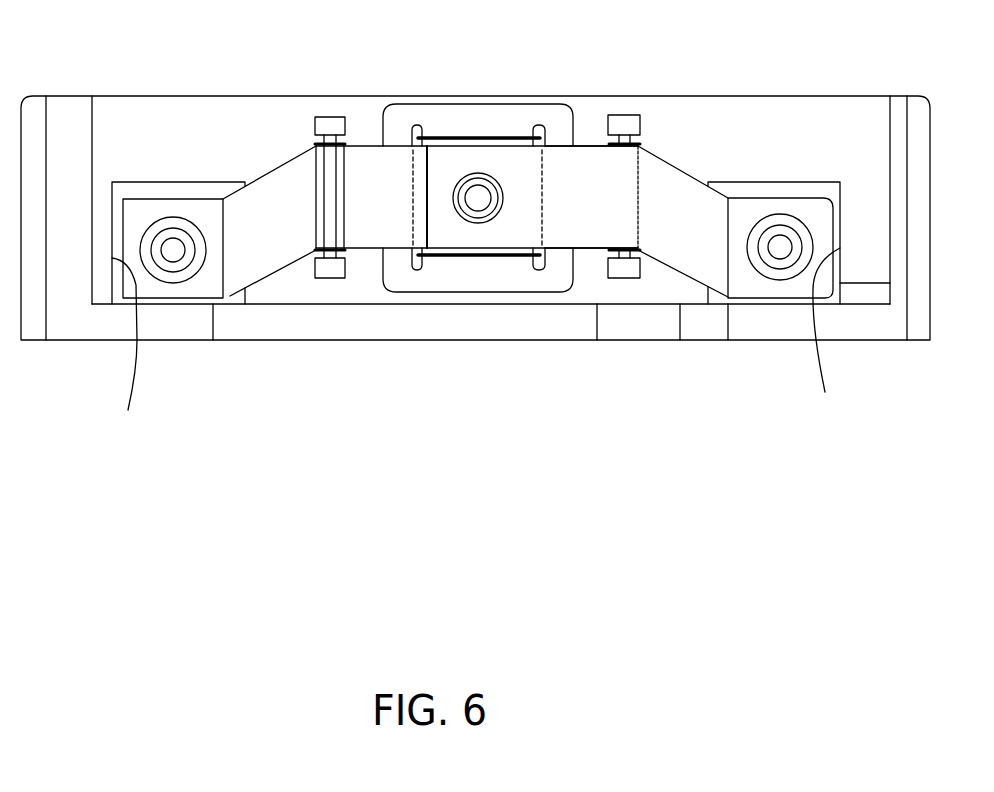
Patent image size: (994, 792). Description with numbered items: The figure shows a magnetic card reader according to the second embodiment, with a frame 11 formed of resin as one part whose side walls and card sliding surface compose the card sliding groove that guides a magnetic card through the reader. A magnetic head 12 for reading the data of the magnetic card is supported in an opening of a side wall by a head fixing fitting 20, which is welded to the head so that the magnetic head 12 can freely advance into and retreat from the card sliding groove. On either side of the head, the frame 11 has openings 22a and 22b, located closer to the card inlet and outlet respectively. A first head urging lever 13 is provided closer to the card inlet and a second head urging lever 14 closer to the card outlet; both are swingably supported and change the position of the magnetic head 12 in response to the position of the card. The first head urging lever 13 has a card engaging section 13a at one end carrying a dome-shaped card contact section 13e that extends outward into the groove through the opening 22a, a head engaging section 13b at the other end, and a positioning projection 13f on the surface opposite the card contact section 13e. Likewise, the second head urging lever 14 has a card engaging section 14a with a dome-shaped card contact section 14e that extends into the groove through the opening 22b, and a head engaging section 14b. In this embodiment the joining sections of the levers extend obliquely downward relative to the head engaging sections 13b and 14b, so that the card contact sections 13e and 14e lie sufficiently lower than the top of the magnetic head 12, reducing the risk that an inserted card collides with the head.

The frame 11 is at (72, 103).
The magnetic head 12 is at (413, 143).
The first head urging lever 13 is at (597, 255).
The card engaging section 13a is at (748, 287).
The head engaging section 13b is at (593, 165).
The card contact section 13e is at (780, 245).
The positioning projection 13f is at (480, 205).
The second head urging lever 14 is at (362, 250).
The card engaging section 14a is at (180, 288).
The head engaging section 14b is at (360, 165).
The card contact section 14e is at (174, 245).
The head fixing fitting 20 is at (492, 108).
The opening 22a is at (826, 339).
The opening 22b is at (127, 352).